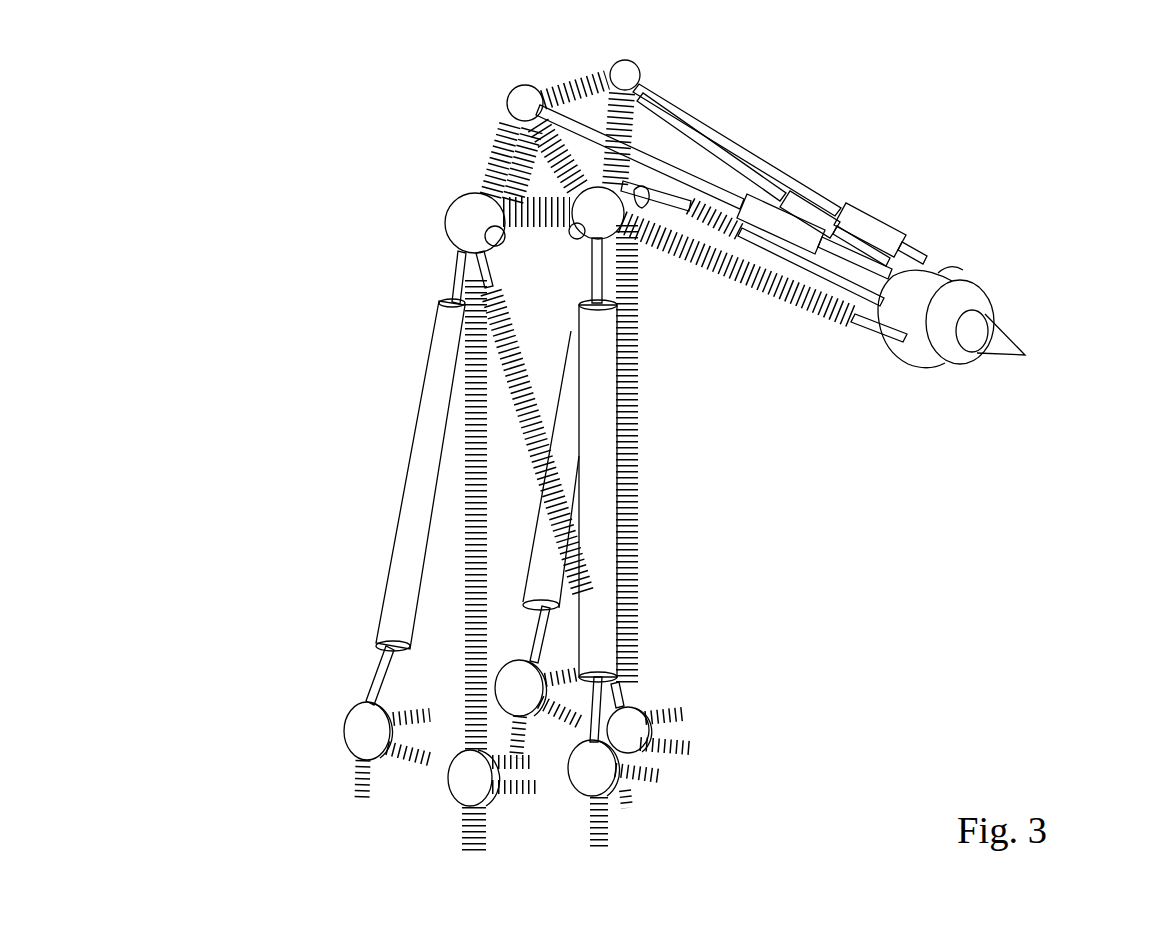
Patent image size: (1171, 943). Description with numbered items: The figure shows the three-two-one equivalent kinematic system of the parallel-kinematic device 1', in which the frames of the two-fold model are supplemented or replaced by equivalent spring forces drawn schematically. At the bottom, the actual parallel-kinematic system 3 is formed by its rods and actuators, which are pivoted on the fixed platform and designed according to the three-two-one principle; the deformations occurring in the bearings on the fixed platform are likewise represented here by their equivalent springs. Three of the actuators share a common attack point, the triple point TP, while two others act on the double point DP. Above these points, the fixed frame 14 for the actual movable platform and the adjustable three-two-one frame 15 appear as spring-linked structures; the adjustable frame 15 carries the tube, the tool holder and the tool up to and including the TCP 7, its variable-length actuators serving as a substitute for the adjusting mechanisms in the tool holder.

The parallel-kinematic device 1' is at (669, 439).
The parallel-kinematic system 3 is at (342, 541).
The TCP 7 is at (1025, 355).
The fixed frame 14 is at (455, 146).
The adjustable 3-2-1 frame 15 is at (851, 165).
The triple point TP is at (628, 78).
The double point DP is at (525, 104).